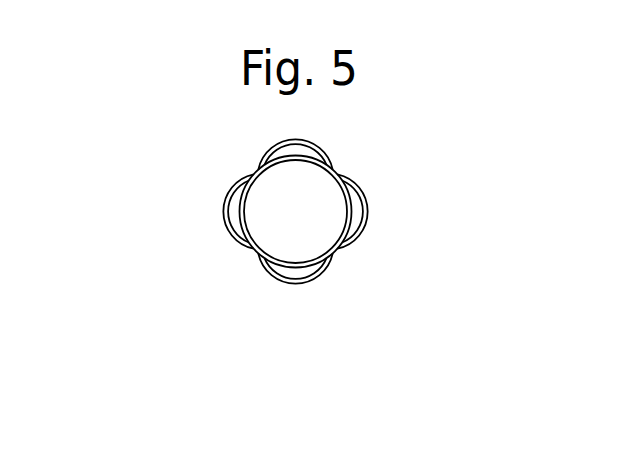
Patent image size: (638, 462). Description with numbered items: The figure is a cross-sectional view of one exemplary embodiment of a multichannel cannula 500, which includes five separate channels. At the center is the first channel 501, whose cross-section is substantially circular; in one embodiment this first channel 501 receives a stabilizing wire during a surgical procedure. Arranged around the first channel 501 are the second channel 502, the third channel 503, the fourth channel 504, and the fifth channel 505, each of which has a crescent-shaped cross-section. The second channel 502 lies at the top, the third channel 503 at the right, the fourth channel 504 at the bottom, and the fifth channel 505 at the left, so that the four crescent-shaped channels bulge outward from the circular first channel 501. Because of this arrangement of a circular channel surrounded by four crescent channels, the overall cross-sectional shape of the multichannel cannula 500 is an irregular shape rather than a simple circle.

The multichannel cannula 500 is at (193, 156).
The first channel 501 is at (304, 216).
The second channel 502 is at (290, 147).
The third channel 503 is at (362, 206).
The fourth channel 504 is at (290, 270).
The fifth channel 505 is at (219, 208).